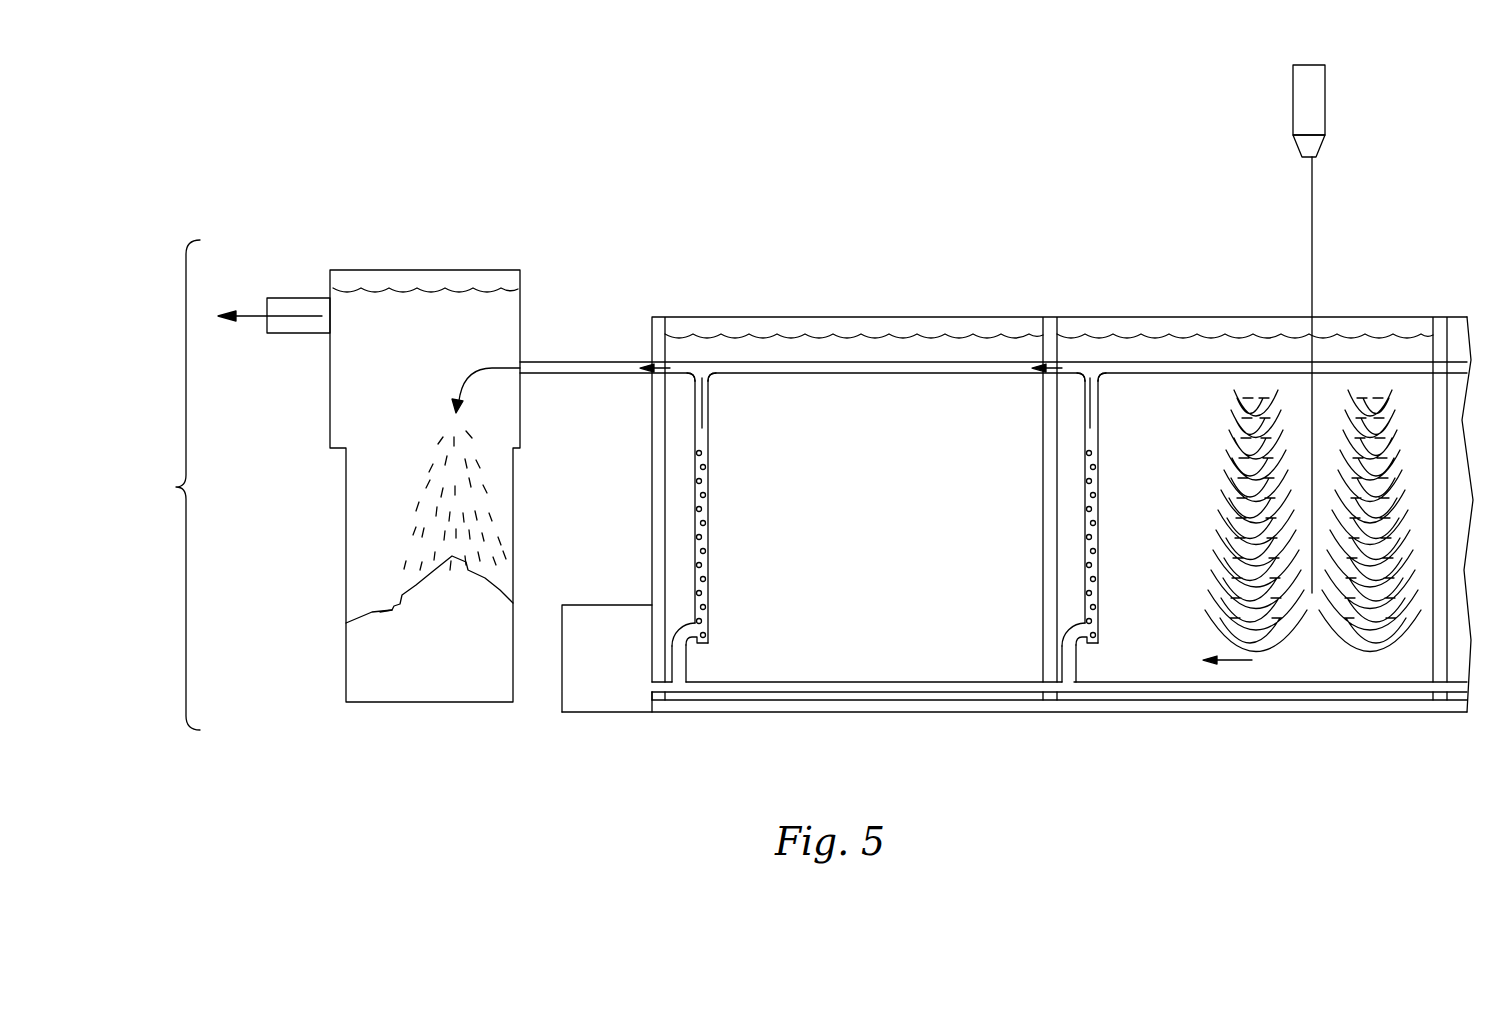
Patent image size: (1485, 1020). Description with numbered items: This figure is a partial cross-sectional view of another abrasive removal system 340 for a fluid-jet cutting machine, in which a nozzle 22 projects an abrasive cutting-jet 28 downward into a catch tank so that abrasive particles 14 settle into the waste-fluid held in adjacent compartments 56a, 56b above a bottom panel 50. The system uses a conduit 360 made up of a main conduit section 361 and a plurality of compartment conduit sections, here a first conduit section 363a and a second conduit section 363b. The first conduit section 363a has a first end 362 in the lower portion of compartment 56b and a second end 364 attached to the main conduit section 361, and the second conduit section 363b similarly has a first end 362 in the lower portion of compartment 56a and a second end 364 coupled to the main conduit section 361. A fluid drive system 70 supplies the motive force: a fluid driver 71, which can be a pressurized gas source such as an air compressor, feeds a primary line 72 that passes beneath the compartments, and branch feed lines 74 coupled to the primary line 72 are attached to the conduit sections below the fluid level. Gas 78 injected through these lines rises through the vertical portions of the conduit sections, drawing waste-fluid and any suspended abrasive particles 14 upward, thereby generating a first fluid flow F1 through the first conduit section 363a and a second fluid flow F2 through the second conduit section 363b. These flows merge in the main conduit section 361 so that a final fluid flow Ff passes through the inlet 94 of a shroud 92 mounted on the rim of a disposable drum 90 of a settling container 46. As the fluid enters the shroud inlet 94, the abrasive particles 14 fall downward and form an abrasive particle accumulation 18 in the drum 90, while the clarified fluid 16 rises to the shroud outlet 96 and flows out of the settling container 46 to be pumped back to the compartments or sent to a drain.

The abrasive particles 14 is at (420, 508).
The clarified fluid 16 is at (258, 297).
The abrasive particle accumulation 18 is at (382, 612).
The nozzle 22 is at (1326, 89).
The abrasive cutting-jet 28 is at (1313, 219).
The settling container 46 is at (369, 454).
The bottom panel 50 is at (945, 713).
The compartment 56a is at (849, 336).
The compartment 56b is at (1240, 336).
The fluid drive system 70 is at (550, 715).
The fluid driver 71 is at (586, 604).
The primary line 72 is at (870, 693).
The branch feed lines 74 is at (687, 660).
The gas 78 is at (697, 521).
The disposable drum 90 is at (346, 611).
The shroud 92 is at (412, 268).
The inlet 94 is at (520, 361).
The outlet 96 is at (337, 302).
The abrasive removal system 340 is at (327, 468).
The conduit 360 is at (578, 325).
The main conduit section 361 is at (627, 360).
The first end 362 is at (713, 626).
The first conduit section 363a is at (1100, 516).
The second conduit section 363b is at (712, 516).
The second end 364 is at (712, 378).
The first fluid flow F1 is at (1093, 428).
The second fluid flow F2 is at (703, 428).
The final fluid flow Ff is at (478, 370).